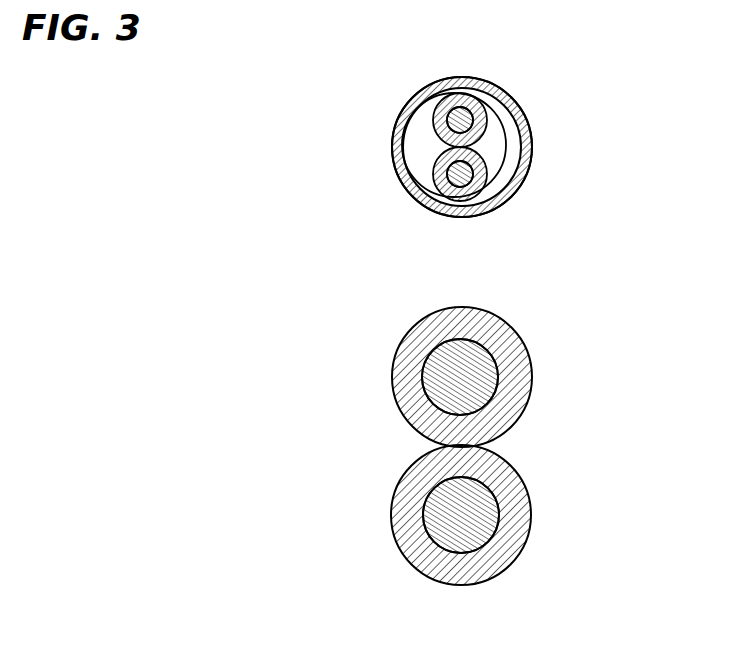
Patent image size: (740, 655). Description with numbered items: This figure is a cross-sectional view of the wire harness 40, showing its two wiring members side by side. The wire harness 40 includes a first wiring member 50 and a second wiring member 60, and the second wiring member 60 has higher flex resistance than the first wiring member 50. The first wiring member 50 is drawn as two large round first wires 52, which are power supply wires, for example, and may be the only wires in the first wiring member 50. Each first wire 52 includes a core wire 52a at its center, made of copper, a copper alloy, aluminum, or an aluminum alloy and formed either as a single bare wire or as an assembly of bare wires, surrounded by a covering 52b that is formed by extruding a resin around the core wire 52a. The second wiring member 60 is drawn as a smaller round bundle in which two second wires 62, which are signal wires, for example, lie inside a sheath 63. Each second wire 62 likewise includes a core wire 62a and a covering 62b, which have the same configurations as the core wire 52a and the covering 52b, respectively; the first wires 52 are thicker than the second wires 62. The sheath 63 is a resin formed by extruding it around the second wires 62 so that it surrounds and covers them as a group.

The wire harness 40 is at (517, 78).
The first wiring member 50 is at (520, 479).
The first wire 52 is at (520, 446).
The core wire 52a is at (500, 510).
The covering 52b is at (532, 536).
The second wiring member 60 is at (546, 150).
The second wire 62 is at (382, 147).
The core wire 62a is at (447, 119).
The covering 62b is at (437, 136).
The sheath 63 is at (431, 90).